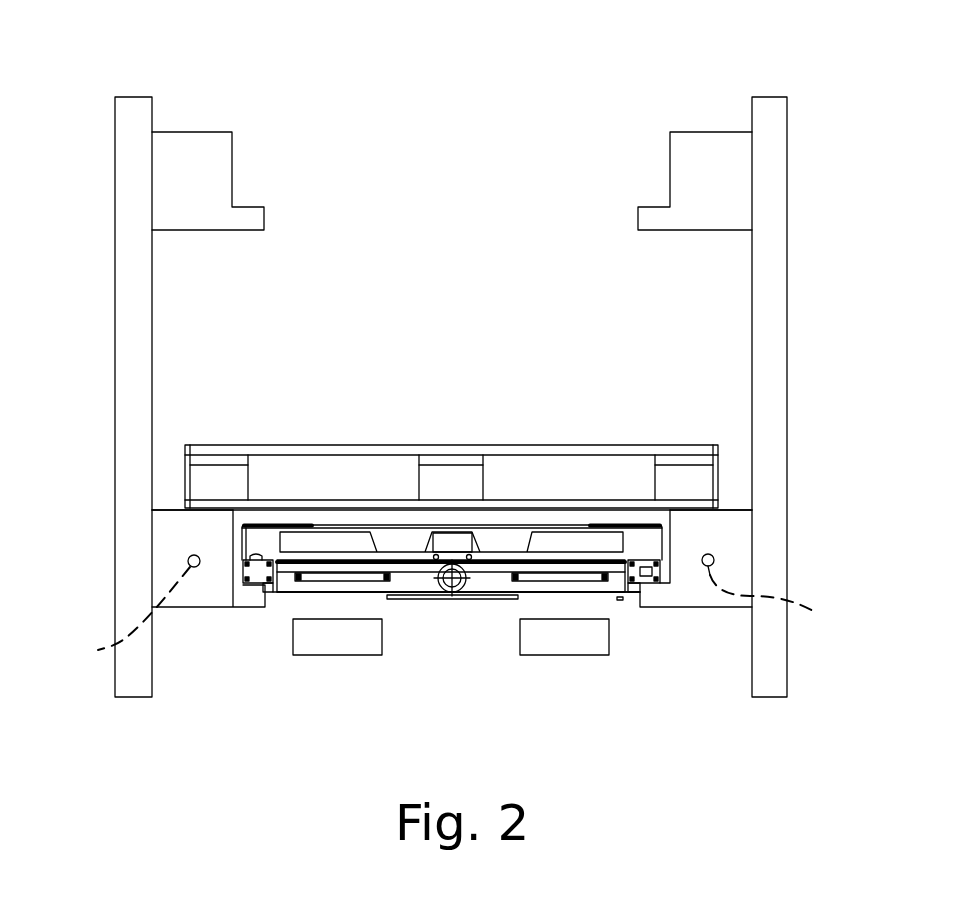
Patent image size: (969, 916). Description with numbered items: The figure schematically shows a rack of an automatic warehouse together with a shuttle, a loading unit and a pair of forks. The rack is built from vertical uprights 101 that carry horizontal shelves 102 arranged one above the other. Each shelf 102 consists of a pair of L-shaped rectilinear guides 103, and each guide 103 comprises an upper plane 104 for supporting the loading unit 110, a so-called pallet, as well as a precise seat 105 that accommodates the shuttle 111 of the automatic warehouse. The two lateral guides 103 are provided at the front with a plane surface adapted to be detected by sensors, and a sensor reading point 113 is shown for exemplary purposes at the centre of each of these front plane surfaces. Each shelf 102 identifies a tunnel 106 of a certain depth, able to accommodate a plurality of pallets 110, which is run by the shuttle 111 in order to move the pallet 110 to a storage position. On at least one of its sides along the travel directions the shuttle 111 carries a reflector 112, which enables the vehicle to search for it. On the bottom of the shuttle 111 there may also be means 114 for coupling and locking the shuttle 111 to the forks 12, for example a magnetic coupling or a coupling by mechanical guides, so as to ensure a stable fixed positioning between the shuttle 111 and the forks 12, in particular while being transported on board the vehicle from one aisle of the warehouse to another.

The forks 12 is at (311, 647).
The vertical upright 101 is at (140, 118).
The horizontal shelf 102 is at (744, 535).
The L-shaped rectilinear guide 103 is at (207, 148).
The upper plane 104 is at (163, 510).
The seat 105 is at (235, 590).
The tunnel 106 is at (470, 338).
The loading unit 110 is at (218, 480).
The shuttle 111 is at (318, 558).
The reflector 112 is at (453, 538).
The sensor reading point 113 is at (450, 622).
The coupling and locking means 114 is at (297, 598).